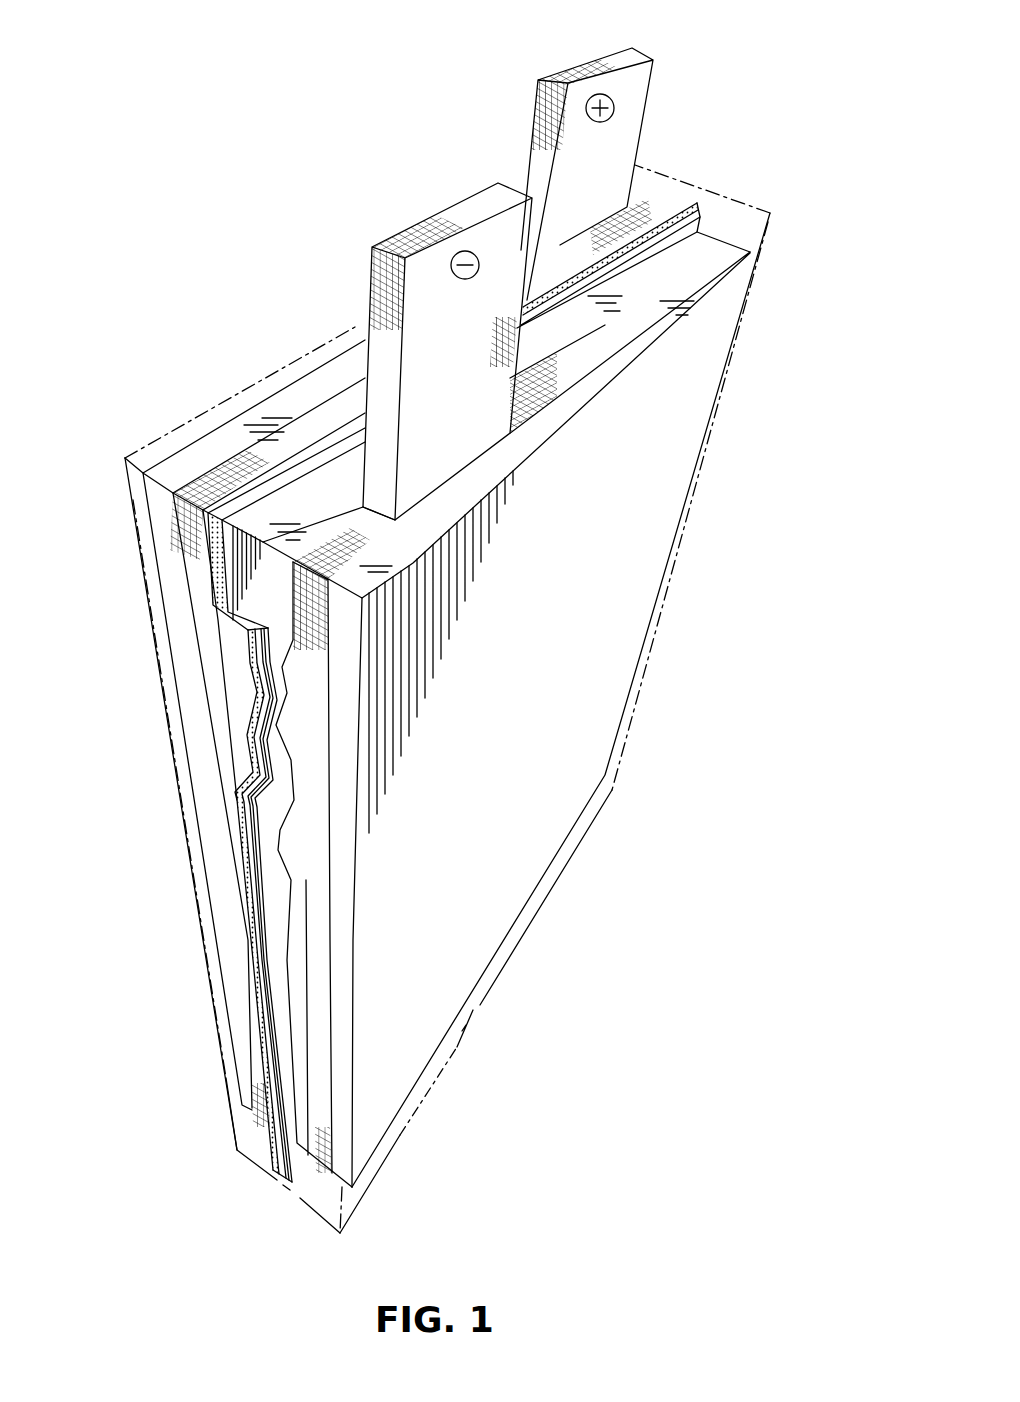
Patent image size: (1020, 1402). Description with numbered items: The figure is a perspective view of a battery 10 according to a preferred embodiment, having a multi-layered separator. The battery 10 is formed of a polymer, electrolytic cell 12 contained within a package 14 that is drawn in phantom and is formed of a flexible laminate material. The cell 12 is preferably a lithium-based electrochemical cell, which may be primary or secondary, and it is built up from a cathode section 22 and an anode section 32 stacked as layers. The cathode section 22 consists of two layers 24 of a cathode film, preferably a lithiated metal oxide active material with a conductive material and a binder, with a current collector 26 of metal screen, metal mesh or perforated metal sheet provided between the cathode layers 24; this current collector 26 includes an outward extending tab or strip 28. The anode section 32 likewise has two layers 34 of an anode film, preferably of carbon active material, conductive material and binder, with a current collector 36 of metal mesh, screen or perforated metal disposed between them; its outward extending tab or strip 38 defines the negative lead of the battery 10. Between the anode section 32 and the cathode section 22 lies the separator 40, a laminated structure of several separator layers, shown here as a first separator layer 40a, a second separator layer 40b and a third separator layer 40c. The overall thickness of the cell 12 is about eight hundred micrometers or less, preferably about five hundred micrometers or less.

The battery 10 is at (264, 195).
The cell 12 is at (690, 441).
The package 14 is at (667, 587).
The cathode section 22 is at (273, 385).
The cathode layer 24 is at (233, 678).
The current collector 26 is at (250, 465).
The tab 28 is at (605, 66).
The anode section 32 is at (730, 228).
The anode layer 34 is at (697, 295).
The current collector 36 is at (607, 335).
The tab 38 is at (440, 226).
The separator 40 is at (226, 823).
The first separator layer 40a is at (240, 840).
The second separator layer 40b is at (255, 897).
The third separator layer 40c is at (268, 955).